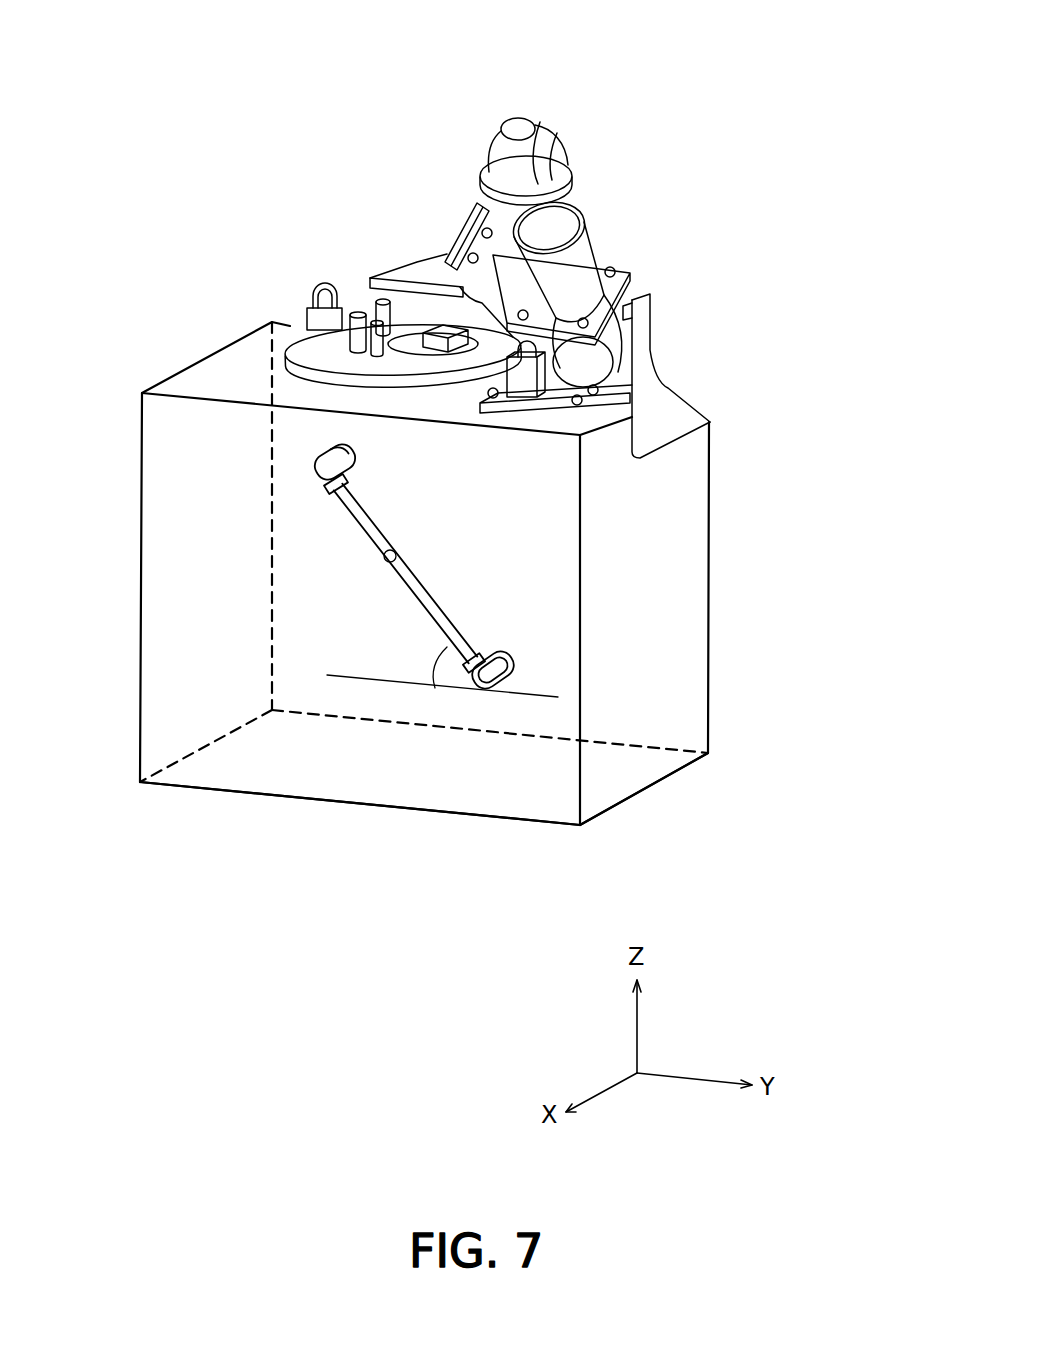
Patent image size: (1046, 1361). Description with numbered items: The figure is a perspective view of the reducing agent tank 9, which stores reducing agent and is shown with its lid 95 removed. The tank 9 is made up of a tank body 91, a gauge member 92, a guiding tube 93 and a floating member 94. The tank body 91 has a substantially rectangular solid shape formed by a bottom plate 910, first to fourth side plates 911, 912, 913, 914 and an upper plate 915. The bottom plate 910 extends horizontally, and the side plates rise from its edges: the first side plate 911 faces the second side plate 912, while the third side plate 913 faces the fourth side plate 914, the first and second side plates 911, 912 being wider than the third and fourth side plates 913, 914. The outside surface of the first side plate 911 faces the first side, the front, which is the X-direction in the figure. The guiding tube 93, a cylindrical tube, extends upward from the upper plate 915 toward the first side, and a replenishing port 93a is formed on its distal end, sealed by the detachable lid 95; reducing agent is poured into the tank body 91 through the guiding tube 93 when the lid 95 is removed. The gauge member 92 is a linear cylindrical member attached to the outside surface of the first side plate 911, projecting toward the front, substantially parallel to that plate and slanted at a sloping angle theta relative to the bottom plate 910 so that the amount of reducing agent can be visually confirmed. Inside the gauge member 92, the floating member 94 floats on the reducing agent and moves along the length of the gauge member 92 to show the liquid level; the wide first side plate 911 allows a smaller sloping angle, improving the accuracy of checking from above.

The reducing agent tank 9 is at (718, 250).
The tank body 91 is at (715, 587).
The bottom plate 910 is at (603, 780).
The first side plate 911 is at (318, 628).
The second side plate 912 is at (625, 513).
The third side plate 913 is at (670, 643).
The fourth side plate 914 is at (193, 630).
The upper plate 915 is at (230, 373).
The gauge member 92 is at (423, 598).
The guiding tube 93 is at (582, 260).
The replenishing port 93a is at (573, 207).
The floating member 94 is at (385, 557).
The lid 95 is at (525, 113).